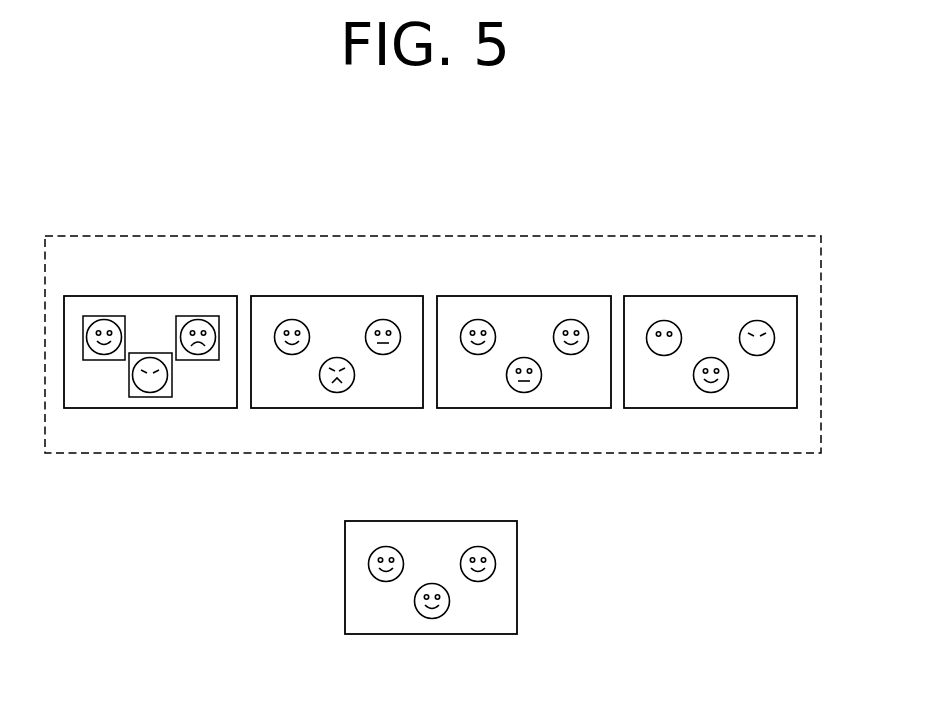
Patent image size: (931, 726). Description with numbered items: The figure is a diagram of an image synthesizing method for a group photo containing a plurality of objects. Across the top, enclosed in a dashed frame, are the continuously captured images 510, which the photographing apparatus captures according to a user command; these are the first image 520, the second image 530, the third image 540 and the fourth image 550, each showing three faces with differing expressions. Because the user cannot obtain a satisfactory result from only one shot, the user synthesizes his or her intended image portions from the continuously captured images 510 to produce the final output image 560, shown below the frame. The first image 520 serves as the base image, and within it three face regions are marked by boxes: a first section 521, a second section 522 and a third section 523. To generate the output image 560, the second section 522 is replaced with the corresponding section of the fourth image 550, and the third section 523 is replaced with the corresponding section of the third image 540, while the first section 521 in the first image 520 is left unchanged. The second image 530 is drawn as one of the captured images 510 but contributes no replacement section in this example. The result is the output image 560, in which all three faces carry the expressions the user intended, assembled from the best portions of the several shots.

The continuously captured images 510 is at (457, 236).
The image #1 520 is at (224, 296).
The section f1 521 is at (92, 316).
The section f2 522 is at (131, 353).
The section f3 523 is at (186, 316).
The image #2 530 is at (409, 296).
The image #3 540 is at (598, 296).
The image #4 550 is at (783, 296).
The output image 560 is at (505, 521).